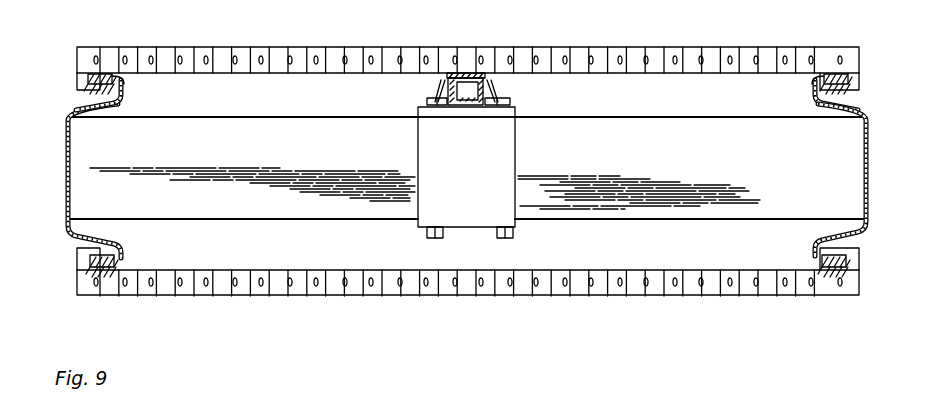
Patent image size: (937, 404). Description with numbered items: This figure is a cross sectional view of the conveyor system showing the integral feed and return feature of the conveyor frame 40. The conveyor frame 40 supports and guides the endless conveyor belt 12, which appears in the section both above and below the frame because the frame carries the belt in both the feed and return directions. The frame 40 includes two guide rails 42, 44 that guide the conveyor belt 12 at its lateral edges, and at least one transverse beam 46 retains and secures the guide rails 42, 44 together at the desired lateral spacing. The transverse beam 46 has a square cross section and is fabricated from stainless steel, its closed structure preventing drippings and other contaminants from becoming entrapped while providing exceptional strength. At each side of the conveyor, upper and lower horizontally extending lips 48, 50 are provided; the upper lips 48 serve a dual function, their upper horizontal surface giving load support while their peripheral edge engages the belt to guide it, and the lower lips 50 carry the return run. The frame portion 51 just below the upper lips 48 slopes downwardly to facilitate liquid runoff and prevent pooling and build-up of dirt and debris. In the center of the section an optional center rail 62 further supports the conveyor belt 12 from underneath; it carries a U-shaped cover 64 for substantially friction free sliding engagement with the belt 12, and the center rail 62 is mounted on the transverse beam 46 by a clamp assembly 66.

The endless conveyor belt 12 is at (373, 41).
The conveyor frame 40 is at (435, 310).
The guide rail 42 is at (65, 172).
The guide rail 44 is at (870, 174).
The transverse beam 46 is at (653, 155).
The upper horizontally extending lip 48 is at (110, 77).
The lower horizontally extending lip 50 is at (122, 258).
The frame portion 51 is at (97, 103).
The center rail 62 is at (490, 80).
The U-shaped cover 64 is at (447, 77).
The clamp assembly 66 is at (414, 150).